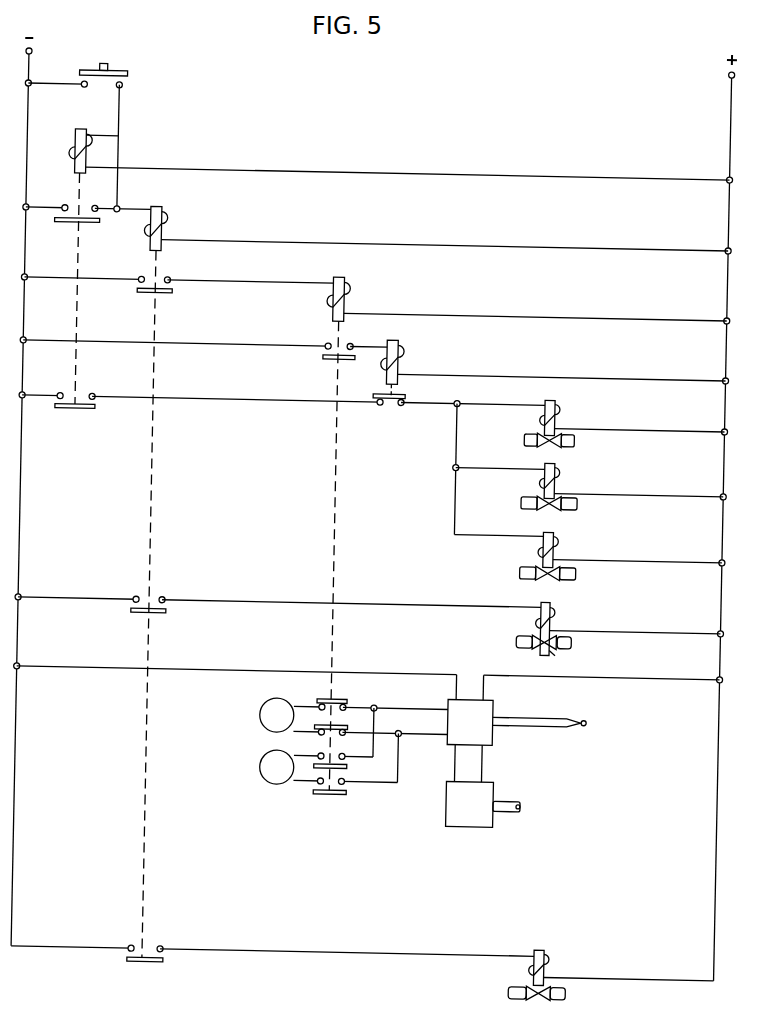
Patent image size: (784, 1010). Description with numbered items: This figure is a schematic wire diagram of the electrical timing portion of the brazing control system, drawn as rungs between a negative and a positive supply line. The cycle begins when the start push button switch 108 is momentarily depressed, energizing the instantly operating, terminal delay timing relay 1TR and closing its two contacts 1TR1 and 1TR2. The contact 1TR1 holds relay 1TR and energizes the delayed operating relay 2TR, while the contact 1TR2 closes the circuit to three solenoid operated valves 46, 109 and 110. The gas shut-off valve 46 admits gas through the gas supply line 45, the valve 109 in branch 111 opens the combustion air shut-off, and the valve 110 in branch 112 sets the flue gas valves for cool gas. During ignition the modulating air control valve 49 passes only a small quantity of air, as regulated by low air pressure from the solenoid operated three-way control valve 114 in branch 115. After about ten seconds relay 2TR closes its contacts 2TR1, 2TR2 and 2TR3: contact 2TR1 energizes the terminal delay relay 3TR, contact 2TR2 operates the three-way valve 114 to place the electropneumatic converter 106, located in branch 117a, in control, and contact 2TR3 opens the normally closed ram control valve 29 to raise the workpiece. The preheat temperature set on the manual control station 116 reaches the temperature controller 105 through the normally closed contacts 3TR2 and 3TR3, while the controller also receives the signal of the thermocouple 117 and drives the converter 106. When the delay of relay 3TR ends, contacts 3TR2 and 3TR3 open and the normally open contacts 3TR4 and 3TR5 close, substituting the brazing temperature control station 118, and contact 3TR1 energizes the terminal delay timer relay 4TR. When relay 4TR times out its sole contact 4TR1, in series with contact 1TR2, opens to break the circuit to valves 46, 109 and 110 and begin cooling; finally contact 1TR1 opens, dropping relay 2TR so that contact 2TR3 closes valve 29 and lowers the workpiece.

The start push button switch 108 is at (129, 71).
The instantly operating terminal delay timing relay 1TR is at (381, 266).
The contact of relay 1TR 1TR1 is at (84, 222).
The contact of relay 1TR 1TR2 is at (100, 407).
The delayed operating relay 2TR is at (165, 228).
The contact of relay 2TR 2TR1 is at (176, 289).
The contact of relay 2TR 2TR2 is at (177, 609).
The contact of relay 2TR 2TR3 is at (168, 959).
The instantly operating terminal delay relay 3TR is at (349, 300).
The contact of relay 3TR 3TR1 is at (329, 353).
The normally closed contact of relay 3TR 3TR2 is at (350, 693).
The normally closed contact of relay 3TR 3TR3 is at (361, 721).
The normally open contact of relay 3TR 3TR4 is at (361, 760).
The normally open contact of relay 3TR 3TR5 is at (350, 788).
The instantly operating terminal delay timer relay 4TR is at (404, 362).
The sole contact of relay 4TR 4TR1 is at (402, 398).
The solenoid operated valve 109 is at (565, 418).
The branch 111 is at (537, 425).
The gas shut-off valve 46 is at (565, 478).
The gas supply line 45 is at (524, 488).
The solenoid operated valve 110 is at (565, 546).
The branch 112 is at (532, 561).
The modulating air control valve 49 is at (503, 630).
The branch 115 is at (551, 645).
The solenoid operated three-way control valve 114 is at (569, 651).
The branch 117a is at (577, 632).
The thermocouple 117 is at (599, 710).
The temperature controller 105 is at (495, 722).
The electropneumatic converter 106 is at (496, 804).
The preheat manual temperature control station 116 is at (280, 718).
The brazing temperature control station 118 is at (281, 770).
The ram control valve 29 is at (561, 960).